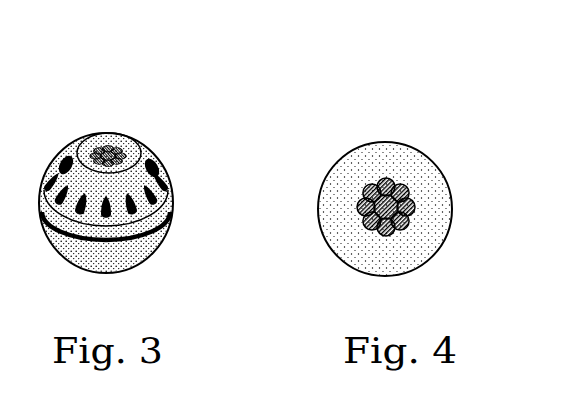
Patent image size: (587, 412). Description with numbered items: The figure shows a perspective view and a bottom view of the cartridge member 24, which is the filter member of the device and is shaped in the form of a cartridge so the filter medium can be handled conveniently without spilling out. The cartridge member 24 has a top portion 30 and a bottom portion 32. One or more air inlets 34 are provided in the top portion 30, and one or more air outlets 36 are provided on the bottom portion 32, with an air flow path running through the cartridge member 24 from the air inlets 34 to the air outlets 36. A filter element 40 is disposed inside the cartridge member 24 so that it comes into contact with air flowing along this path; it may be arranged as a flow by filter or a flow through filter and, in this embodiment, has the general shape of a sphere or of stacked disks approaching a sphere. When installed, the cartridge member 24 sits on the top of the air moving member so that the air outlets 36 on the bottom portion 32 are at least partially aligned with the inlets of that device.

In FIG. 3, the cartridge member 24 is at (168, 155).
In FIG. 4, the cartridge member 24 is at (413, 137).
In FIG. 3, the top portion 30 is at (152, 138).
In FIG. 3, the bottom portion 32 is at (133, 275).
In FIG. 4, the bottom portion 32 is at (383, 153).
In FIG. 3, the air inlet 34 is at (102, 135).
In FIG. 4, the air outlet 36 is at (355, 214).
In FIG. 3, the filter element 40 is at (173, 189).